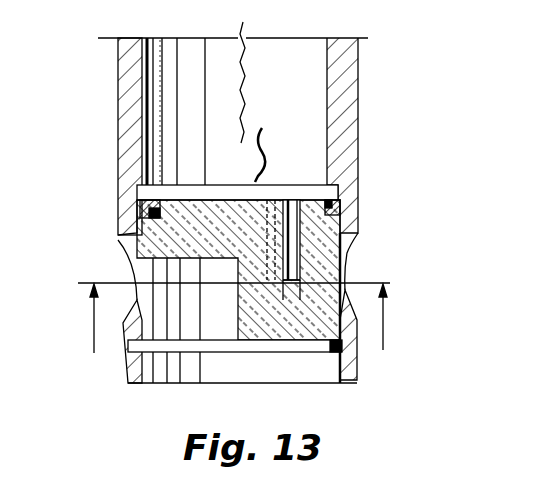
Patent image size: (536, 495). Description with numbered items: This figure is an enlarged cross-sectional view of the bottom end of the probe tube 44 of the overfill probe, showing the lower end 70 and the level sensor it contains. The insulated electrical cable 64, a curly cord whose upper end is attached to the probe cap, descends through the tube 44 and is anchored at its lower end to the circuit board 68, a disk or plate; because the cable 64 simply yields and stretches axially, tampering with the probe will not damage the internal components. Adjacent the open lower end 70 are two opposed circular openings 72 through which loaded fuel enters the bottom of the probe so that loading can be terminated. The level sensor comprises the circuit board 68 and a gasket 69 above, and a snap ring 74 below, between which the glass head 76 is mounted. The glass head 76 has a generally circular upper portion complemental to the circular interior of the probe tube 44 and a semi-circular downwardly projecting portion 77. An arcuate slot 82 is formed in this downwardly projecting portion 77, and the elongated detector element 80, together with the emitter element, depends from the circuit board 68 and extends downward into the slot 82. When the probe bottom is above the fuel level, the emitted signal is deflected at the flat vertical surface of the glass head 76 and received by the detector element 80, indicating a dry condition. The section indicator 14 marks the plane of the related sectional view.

The probe tube 44 is at (118, 100).
The insulated electrical cable 64 is at (228, 184).
The circuit board 68 is at (285, 184).
The gasket 69 is at (345, 208).
The circular openings 72 is at (350, 254).
The glass head 76 is at (116, 257).
The arcuate slot 82 is at (345, 265).
The detector element 80 is at (300, 277).
The lower end 70 is at (158, 383).
The downwardly projecting portion 77 is at (250, 374).
The snap ring 74 is at (290, 372).
The section line 14 is at (240, 331).